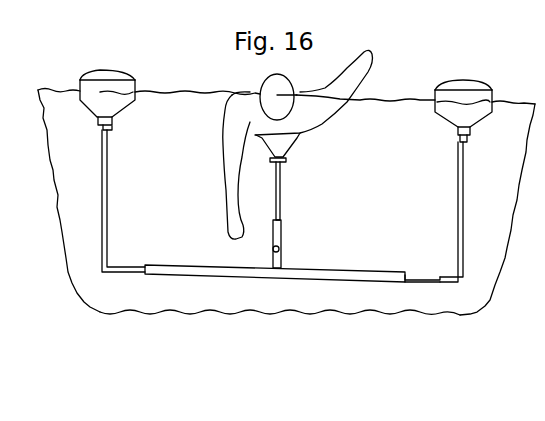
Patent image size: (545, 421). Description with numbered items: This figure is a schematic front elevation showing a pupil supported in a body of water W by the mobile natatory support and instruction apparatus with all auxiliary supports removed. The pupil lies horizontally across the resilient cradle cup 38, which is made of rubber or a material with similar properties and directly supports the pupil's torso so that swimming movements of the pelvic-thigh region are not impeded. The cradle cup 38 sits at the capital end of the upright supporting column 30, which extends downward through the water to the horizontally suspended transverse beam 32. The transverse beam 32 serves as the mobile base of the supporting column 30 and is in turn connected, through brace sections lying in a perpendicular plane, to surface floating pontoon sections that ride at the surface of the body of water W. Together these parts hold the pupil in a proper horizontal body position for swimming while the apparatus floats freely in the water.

The upright supporting column 30 is at (286, 214).
The horizontally suspended transverse beam 32 is at (253, 276).
The resilient cradle cup 38 is at (302, 139).
The body of water W is at (408, 306).